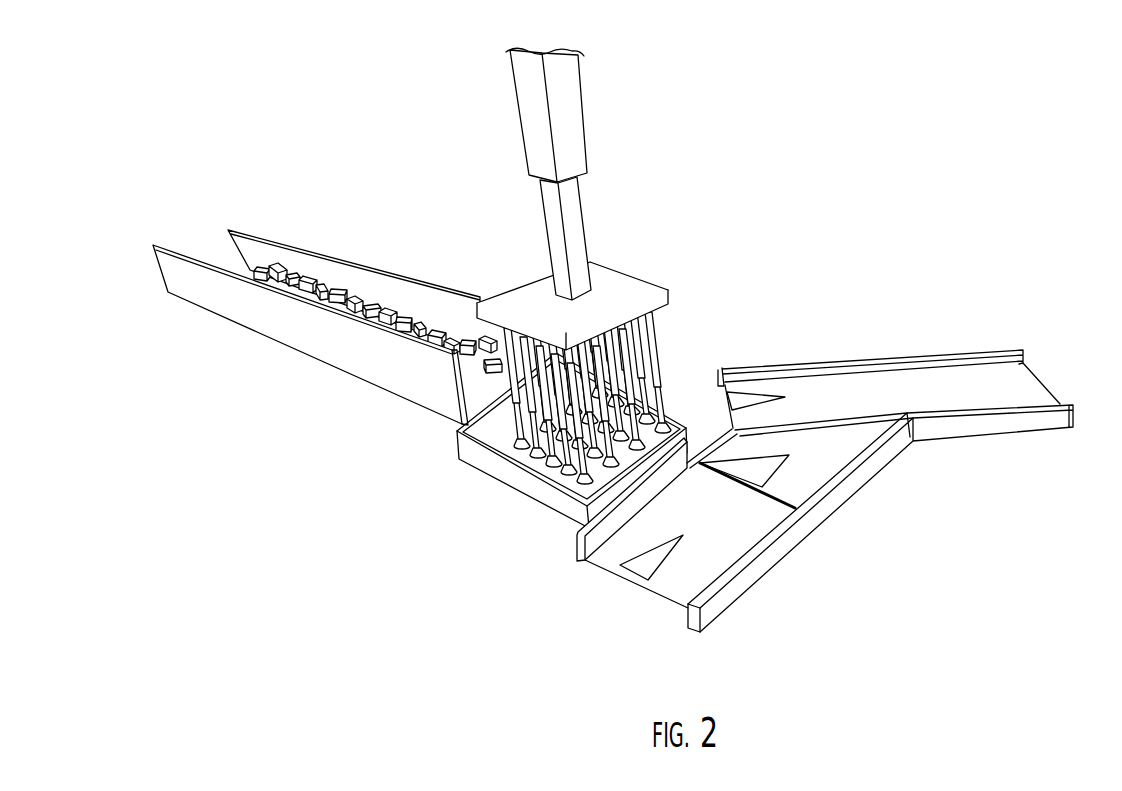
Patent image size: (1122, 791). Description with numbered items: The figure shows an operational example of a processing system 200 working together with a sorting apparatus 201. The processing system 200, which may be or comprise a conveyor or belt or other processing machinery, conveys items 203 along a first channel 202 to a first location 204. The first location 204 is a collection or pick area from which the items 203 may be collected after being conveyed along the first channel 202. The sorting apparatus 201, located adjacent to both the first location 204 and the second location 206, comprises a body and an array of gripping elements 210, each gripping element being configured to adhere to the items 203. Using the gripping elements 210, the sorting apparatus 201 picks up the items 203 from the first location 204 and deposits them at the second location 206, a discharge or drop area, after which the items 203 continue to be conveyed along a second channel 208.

The processing system 200 is at (620, 340).
The sorting apparatus 201 is at (531, 292).
The first channel 202 is at (322, 338).
The items 203 is at (342, 273).
The first location 204 is at (522, 487).
The second location 206 is at (717, 528).
The second channel 208 is at (826, 503).
The array of gripping elements 210 is at (660, 357).